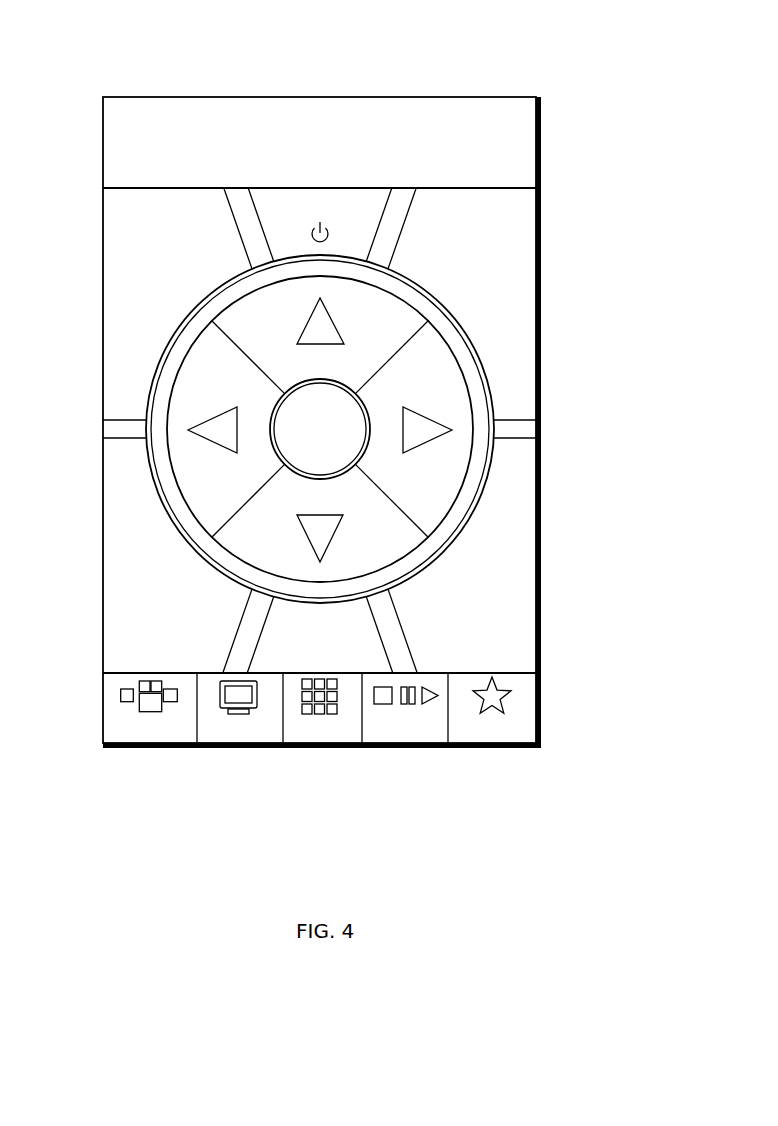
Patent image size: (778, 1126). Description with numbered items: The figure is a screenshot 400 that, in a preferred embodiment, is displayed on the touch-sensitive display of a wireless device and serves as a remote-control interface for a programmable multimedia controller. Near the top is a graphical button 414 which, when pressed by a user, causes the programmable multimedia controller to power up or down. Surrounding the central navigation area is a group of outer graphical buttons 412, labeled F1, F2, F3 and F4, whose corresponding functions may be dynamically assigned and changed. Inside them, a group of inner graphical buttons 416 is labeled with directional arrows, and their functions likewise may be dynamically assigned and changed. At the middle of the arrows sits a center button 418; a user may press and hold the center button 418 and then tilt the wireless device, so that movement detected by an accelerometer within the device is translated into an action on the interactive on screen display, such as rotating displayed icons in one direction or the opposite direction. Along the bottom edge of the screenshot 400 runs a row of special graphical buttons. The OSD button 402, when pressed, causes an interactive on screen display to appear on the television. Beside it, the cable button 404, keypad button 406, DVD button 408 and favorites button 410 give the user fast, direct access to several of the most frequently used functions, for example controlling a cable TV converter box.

The screenshot 400 is at (99, 34).
The OSD button 402 is at (112, 727).
The cable button 404 is at (210, 733).
The keypad button 406 is at (287, 745).
The DVD button 408 is at (435, 733).
The favorites button 410 is at (527, 708).
The outer graphical buttons 412 is at (513, 283).
The graphical button 414 is at (415, 97).
The inner graphical buttons 416 is at (453, 400).
The center button 418 is at (352, 438).